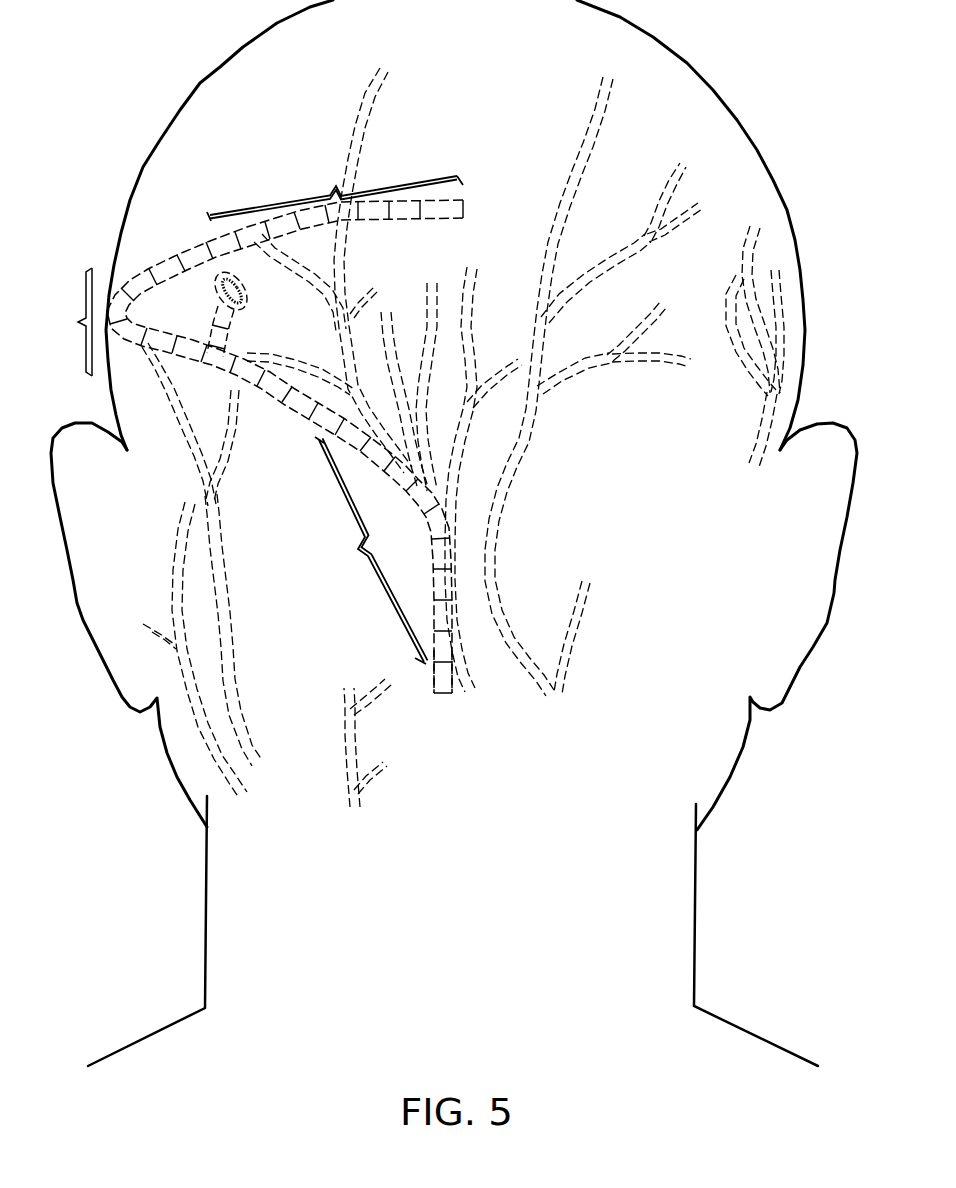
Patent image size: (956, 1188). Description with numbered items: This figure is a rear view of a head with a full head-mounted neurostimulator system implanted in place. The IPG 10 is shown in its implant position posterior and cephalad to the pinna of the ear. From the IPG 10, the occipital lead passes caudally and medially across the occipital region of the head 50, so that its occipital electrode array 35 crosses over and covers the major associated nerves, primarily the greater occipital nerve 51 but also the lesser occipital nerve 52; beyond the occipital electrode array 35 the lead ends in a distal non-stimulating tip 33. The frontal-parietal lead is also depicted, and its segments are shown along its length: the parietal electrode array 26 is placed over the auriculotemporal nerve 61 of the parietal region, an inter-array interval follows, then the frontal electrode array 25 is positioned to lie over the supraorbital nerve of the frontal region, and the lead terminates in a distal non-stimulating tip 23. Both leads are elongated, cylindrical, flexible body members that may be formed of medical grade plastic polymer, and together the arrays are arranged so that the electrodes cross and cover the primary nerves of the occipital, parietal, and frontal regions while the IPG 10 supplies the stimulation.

The IPG 10 is at (200, 337).
The distal non-stimulating tip 23 is at (462, 209).
The frontal electrode array 25 is at (335, 186).
The parietal electrode array 26 is at (67, 322).
The distal non-stimulating tip 33 is at (433, 683).
The occipital electrode array 35 is at (371, 550).
The occipital region of the head 50 is at (556, 490).
The greater occipital nerve 51 is at (473, 299).
The lesser occipital nerve 52 is at (528, 430).
The auriculotemporal nerve 61 is at (803, 356).